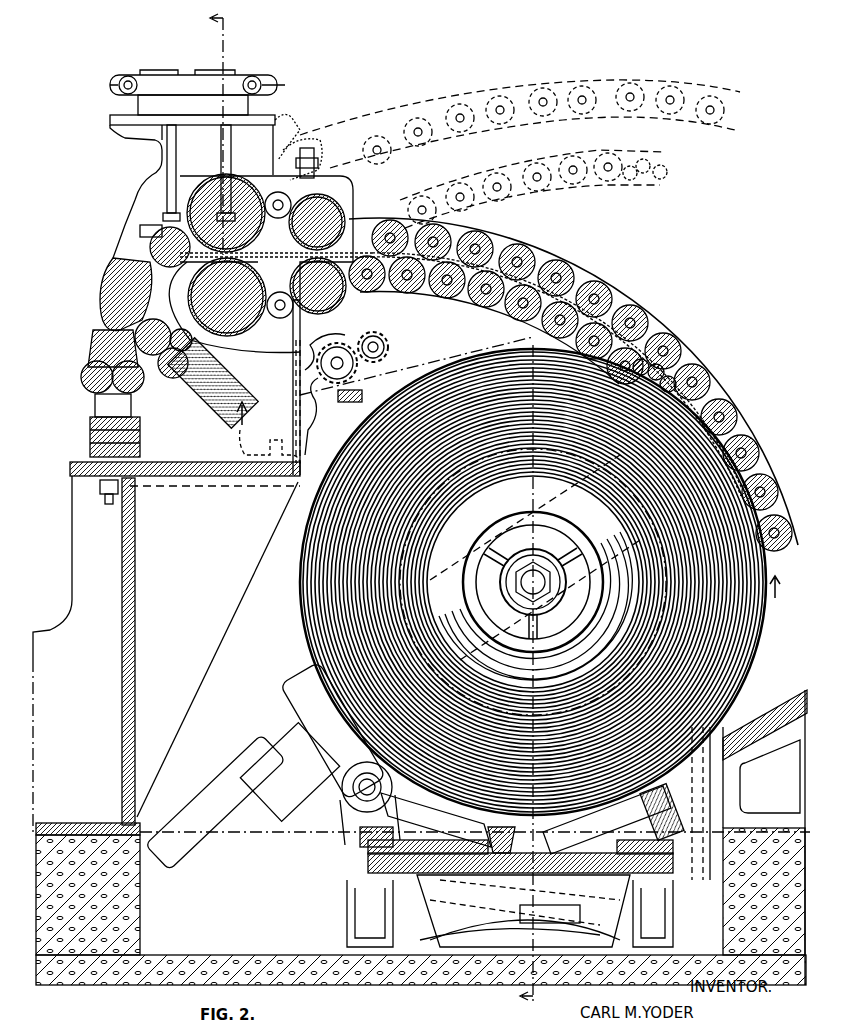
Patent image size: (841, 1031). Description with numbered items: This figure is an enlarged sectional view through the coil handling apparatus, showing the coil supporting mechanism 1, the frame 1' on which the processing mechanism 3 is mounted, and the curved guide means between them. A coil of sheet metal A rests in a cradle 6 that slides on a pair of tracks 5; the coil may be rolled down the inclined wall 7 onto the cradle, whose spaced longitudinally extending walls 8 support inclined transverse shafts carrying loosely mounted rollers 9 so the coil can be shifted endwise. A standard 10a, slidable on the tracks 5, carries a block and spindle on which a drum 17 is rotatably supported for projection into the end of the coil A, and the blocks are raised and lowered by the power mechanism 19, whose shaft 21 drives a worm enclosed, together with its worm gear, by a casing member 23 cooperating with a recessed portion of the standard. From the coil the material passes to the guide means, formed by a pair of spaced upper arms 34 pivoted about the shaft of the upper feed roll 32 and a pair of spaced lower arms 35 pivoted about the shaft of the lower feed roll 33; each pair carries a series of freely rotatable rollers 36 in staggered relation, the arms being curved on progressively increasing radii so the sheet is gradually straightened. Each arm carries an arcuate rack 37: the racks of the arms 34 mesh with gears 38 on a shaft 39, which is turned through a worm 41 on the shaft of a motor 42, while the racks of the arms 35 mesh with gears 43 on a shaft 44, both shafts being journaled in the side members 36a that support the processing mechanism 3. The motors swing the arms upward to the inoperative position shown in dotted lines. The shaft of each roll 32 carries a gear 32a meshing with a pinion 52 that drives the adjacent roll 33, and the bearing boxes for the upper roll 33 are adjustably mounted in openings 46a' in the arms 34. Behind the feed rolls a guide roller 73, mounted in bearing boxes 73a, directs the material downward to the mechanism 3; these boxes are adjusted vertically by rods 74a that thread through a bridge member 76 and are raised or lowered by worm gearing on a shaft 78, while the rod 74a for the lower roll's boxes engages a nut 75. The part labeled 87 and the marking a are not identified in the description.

The coil supporting mechanism 1 is at (423, 837).
The frame 1' is at (67, 707).
The processing mechanism 3 is at (67, 290).
The tracks 5 is at (370, 940).
The cradle 6 is at (445, 950).
The inclined wall 7 is at (795, 690).
The longitudinally extending walls 8 is at (505, 875).
The rollers 9 is at (468, 822).
The standard 10a is at (770, 670).
The drum 17 is at (533, 575).
The power mechanism 19 is at (312, 672).
The shaft 21 is at (345, 810).
The casing member 23 is at (268, 742).
The upper feed roll 32 is at (175, 185).
The gear 32a is at (229, 307).
The lower feed roll 33 is at (335, 205).
The upper arms 34 is at (565, 243).
The lower arms 35 is at (468, 295).
The rollers 36 is at (652, 268).
The side members 36a is at (195, 476).
The arcuate rack 37 is at (385, 318).
The gears 38 is at (283, 402).
The shaft 39 is at (352, 372).
The worm 41 is at (355, 402).
The motor 42 is at (315, 430).
The gears 43 is at (388, 350).
The shaft 44 is at (386, 340).
The openings 46a' is at (520, 154).
The pinion 52 is at (274, 269).
The guide roller 73 is at (152, 250).
The bearing boxes 73a is at (145, 228).
The rod 74a is at (232, 150).
The nut 75 is at (322, 150).
The bridge member 76 is at (268, 100).
The shaft 78 is at (262, 78).
The rollers 87 is at (150, 380).
The coil of sheet metal A is at (762, 642).
The strip a is at (778, 549).